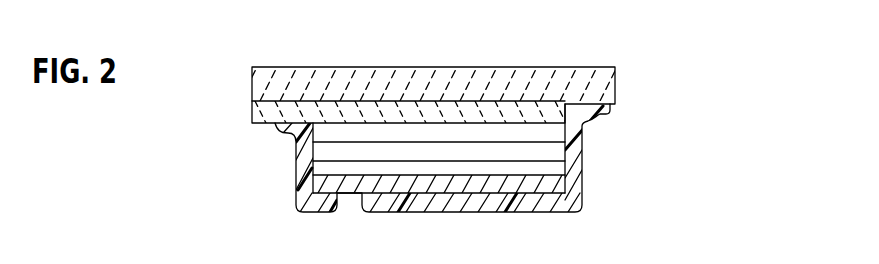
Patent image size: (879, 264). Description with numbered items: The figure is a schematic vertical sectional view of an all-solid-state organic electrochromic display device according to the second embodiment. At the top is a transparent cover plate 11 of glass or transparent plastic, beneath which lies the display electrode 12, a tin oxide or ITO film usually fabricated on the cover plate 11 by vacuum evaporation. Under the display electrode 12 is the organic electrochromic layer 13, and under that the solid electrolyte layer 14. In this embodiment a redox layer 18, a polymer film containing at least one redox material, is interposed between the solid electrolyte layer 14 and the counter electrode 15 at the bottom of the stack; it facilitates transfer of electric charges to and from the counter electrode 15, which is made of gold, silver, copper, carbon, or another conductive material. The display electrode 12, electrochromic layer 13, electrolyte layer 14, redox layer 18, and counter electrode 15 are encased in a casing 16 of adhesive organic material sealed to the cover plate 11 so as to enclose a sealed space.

The transparent cover plate 11 is at (615, 93).
The display electrode 12 is at (252, 113).
The organic electrochromic layer 13 is at (562, 146).
The solid electrolyte layer 14 is at (558, 163).
The counter electrode 15 is at (510, 215).
The casing 16 is at (585, 206).
The redox layer 18 is at (298, 183).